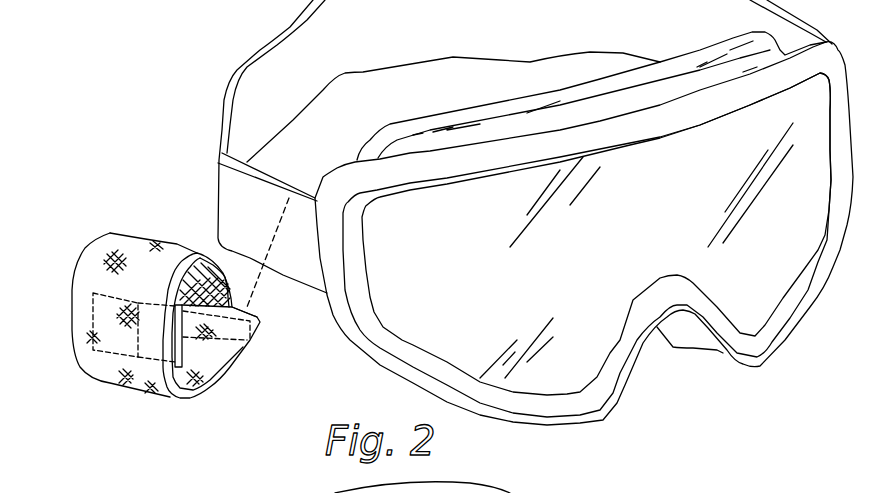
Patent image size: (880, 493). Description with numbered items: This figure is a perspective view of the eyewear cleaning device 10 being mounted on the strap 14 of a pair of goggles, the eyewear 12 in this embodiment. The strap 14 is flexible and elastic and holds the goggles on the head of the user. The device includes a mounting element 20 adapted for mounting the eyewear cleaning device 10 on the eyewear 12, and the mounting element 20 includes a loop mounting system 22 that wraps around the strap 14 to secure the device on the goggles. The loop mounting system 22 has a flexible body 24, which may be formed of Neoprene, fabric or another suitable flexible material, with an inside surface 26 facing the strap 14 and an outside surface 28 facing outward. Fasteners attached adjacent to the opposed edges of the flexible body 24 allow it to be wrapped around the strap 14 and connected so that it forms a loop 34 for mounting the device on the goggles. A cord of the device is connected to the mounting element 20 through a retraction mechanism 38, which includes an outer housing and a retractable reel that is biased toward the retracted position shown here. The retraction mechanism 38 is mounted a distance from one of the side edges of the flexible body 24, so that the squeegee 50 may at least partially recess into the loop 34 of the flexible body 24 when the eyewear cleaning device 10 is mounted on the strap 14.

The eyewear cleaning device 10 is at (105, 190).
The eyewear 12 is at (597, 340).
The strap 14 is at (298, 182).
The mounting element 20 is at (256, 351).
The loop mounting system 22 is at (211, 362).
The flexible body 24 is at (256, 351).
The inside surface 26 is at (229, 365).
The outside surface 28 is at (164, 286).
The loop 34 is at (211, 409).
The retraction mechanism 38 is at (92, 313).
The squeegee 50 is at (173, 355).